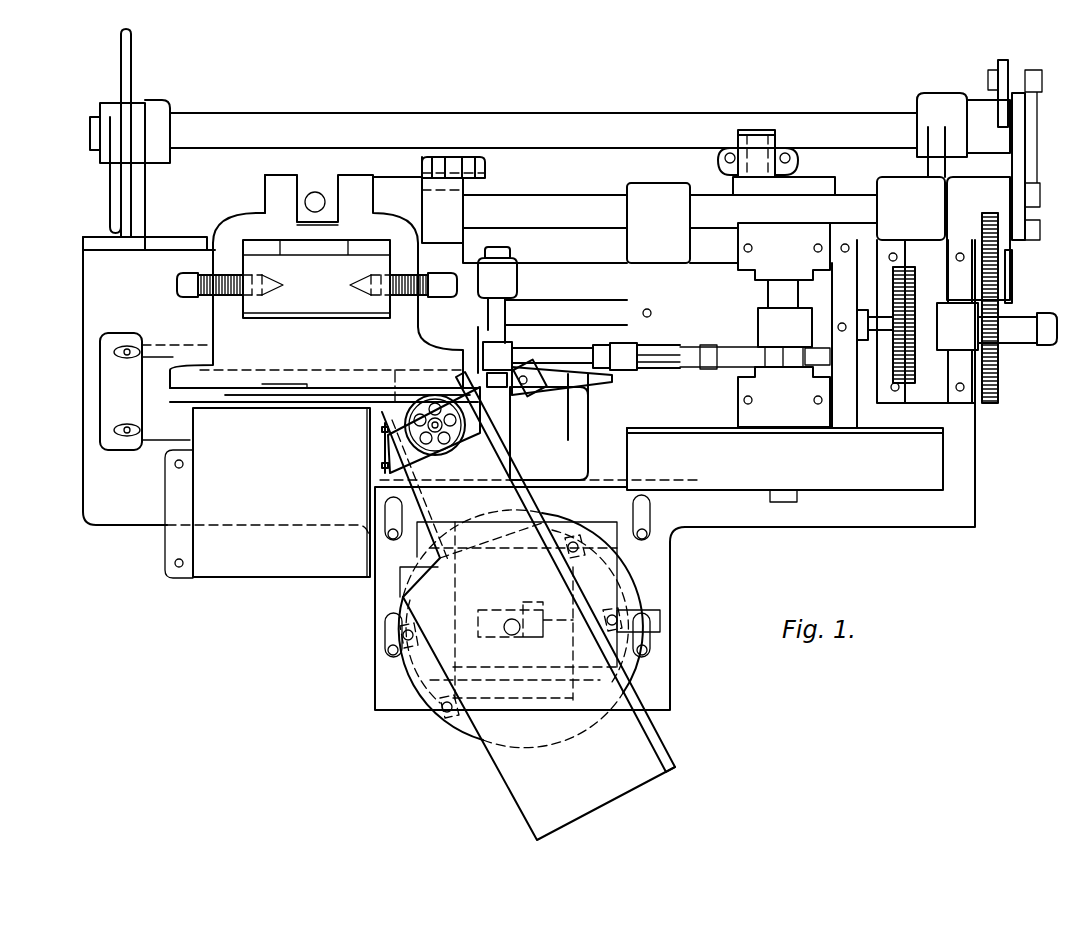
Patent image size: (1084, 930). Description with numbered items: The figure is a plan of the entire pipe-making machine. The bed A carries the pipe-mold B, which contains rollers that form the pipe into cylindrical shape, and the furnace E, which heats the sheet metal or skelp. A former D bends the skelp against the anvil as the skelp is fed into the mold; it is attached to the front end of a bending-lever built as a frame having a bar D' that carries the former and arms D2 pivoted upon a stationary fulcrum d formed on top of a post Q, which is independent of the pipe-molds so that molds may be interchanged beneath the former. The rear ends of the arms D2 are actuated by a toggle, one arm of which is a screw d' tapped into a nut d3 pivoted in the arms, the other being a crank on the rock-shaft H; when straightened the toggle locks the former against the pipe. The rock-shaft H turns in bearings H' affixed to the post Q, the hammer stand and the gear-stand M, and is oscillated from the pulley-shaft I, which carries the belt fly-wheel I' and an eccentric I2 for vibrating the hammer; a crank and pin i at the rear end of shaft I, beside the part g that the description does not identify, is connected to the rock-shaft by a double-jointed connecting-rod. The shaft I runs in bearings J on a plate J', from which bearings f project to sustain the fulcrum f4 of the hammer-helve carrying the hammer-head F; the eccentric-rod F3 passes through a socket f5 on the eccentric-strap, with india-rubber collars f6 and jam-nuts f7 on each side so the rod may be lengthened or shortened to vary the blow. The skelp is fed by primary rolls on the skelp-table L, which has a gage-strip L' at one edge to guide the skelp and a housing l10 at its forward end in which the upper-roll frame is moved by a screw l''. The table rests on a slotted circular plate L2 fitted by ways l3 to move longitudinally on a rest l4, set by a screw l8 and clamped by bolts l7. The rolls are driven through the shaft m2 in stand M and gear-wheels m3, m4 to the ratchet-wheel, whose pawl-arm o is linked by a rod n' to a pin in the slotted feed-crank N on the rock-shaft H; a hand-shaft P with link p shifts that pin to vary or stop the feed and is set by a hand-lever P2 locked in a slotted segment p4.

The hand-shaft P is at (383, 117).
The link p is at (1004, 58).
The slotted segment p4 is at (131, 50).
The hand-lever P2 is at (112, 207).
The bed A is at (529, 473).
The mold B is at (138, 393).
The furnace E is at (193, 475).
The former D is at (324, 288).
The bar D' is at (316, 303).
The arms D2 is at (263, 192).
The fulcrum d is at (303, 292).
The screw d' is at (332, 180).
The nut d3 is at (307, 188).
The post Q is at (316, 289).
The head of the hammer F is at (274, 388).
The rock-shaft H is at (670, 211).
The bearings H' is at (659, 210).
The bearings J is at (765, 325).
The plate J' is at (660, 330).
The pulley-shaft I is at (773, 402).
The eccentric I2 is at (827, 356).
The belt fly-wheel I' is at (785, 457).
The post g is at (740, 148).
The crank and pin i is at (777, 147).
The slotted feed-crank N is at (943, 290).
The rod n' is at (1020, 308).
The pawl-arm o is at (1003, 272).
The stand M is at (957, 326).
The gear-wheel m4 is at (903, 298).
The shaft m2 is at (877, 328).
The gear-wheel m3 is at (914, 397).
The bearings f is at (497, 288).
The fulcrum f4 is at (490, 320).
The eccentric-rod F3 is at (565, 354).
The india-rubber collars f6 is at (627, 347).
The jam-nuts f7 is at (605, 367).
The socket f5 is at (660, 373).
The screw l'' is at (431, 432).
The housing l10 is at (410, 480).
The skelp-table L is at (539, 681).
The gage-strip L' is at (578, 589).
The bolts l7 is at (642, 541).
The slotted circular plate L2 is at (558, 735).
The ways l3 is at (535, 698).
The rest l4 is at (590, 677).
The screw l8 is at (488, 610).